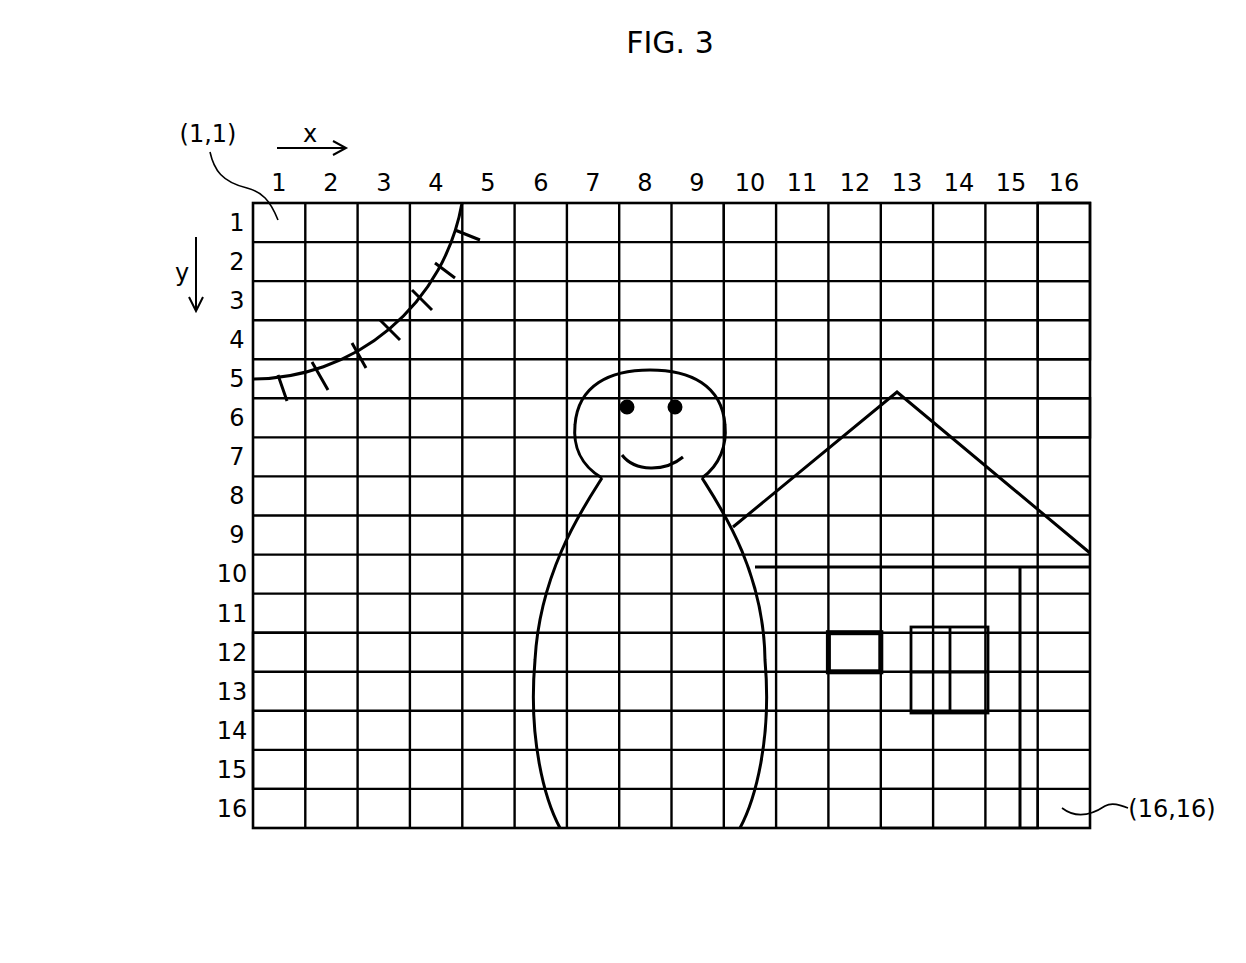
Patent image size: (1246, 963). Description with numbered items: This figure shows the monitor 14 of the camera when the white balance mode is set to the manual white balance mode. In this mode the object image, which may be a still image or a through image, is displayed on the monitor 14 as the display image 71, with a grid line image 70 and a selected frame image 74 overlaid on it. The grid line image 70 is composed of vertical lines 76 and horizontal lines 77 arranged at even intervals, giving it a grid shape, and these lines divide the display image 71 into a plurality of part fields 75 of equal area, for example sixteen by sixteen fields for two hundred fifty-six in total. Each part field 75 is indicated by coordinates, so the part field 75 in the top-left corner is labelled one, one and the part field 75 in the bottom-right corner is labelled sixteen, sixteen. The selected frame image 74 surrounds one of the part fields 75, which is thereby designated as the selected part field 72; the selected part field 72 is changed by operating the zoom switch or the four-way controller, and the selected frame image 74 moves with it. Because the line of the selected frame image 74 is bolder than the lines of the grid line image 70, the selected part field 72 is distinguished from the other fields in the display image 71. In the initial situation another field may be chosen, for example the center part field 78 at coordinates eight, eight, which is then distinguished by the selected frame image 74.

The monitor 14 is at (1112, 170).
The grid line image 70 is at (550, 262).
The display image 71 is at (726, 173).
The selected part field 72 is at (855, 653).
The selected frame image 74 is at (858, 628).
The part field 75 is at (1062, 220).
The vertical lines 76 is at (1038, 418).
The horizontal lines 77 is at (281, 672).
The center part field 78 is at (645, 503).